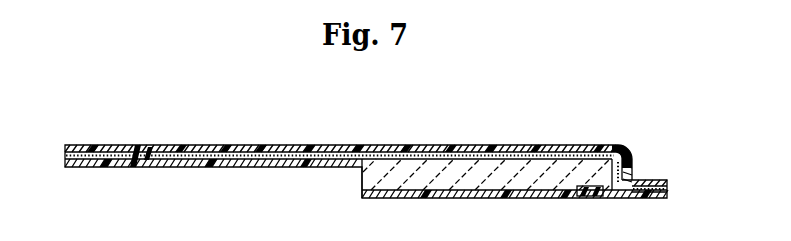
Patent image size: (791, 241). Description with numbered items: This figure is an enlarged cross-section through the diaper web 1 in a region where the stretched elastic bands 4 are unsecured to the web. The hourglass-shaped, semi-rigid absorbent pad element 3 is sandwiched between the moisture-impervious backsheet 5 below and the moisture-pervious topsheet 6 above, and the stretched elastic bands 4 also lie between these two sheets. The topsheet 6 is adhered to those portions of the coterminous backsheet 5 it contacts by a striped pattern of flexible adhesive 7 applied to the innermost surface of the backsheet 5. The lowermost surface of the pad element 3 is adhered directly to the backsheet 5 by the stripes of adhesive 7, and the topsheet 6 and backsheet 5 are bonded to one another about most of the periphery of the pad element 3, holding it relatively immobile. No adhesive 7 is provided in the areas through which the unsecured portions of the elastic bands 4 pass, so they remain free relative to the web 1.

The continuous web 1 is at (378, 134).
The absorbent pad element 3 is at (472, 201).
The stretched elastic band 4 is at (140, 160).
The moisture-impervious backsheet 5 is at (130, 146).
The moisture-pervious topsheet 6 is at (288, 167).
The flexible adhesive 7 is at (80, 143).